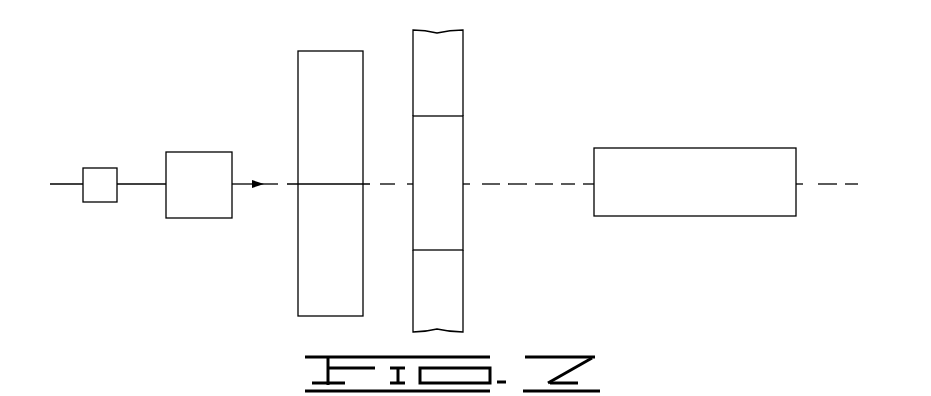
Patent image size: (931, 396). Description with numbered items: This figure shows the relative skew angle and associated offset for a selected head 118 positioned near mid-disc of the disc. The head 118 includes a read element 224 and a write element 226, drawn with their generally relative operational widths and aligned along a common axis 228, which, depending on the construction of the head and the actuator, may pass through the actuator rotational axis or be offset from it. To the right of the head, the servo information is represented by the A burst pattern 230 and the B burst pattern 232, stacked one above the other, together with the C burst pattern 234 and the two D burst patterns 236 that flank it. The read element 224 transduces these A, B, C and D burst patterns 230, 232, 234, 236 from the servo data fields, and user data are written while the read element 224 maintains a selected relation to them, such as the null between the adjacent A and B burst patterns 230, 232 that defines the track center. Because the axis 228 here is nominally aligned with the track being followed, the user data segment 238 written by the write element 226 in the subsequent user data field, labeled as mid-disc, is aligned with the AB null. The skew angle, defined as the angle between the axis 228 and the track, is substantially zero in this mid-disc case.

The head 118 is at (170, 71).
The read element 224 is at (100, 203).
The write element 226 is at (200, 219).
The axis 228 is at (240, 182).
The A burst pattern 230 is at (303, 72).
The B burst pattern 232 is at (303, 292).
The C burst pattern 234 is at (458, 143).
The D burst pattern 236 is at (458, 60).
The user data segment 238 is at (672, 148).